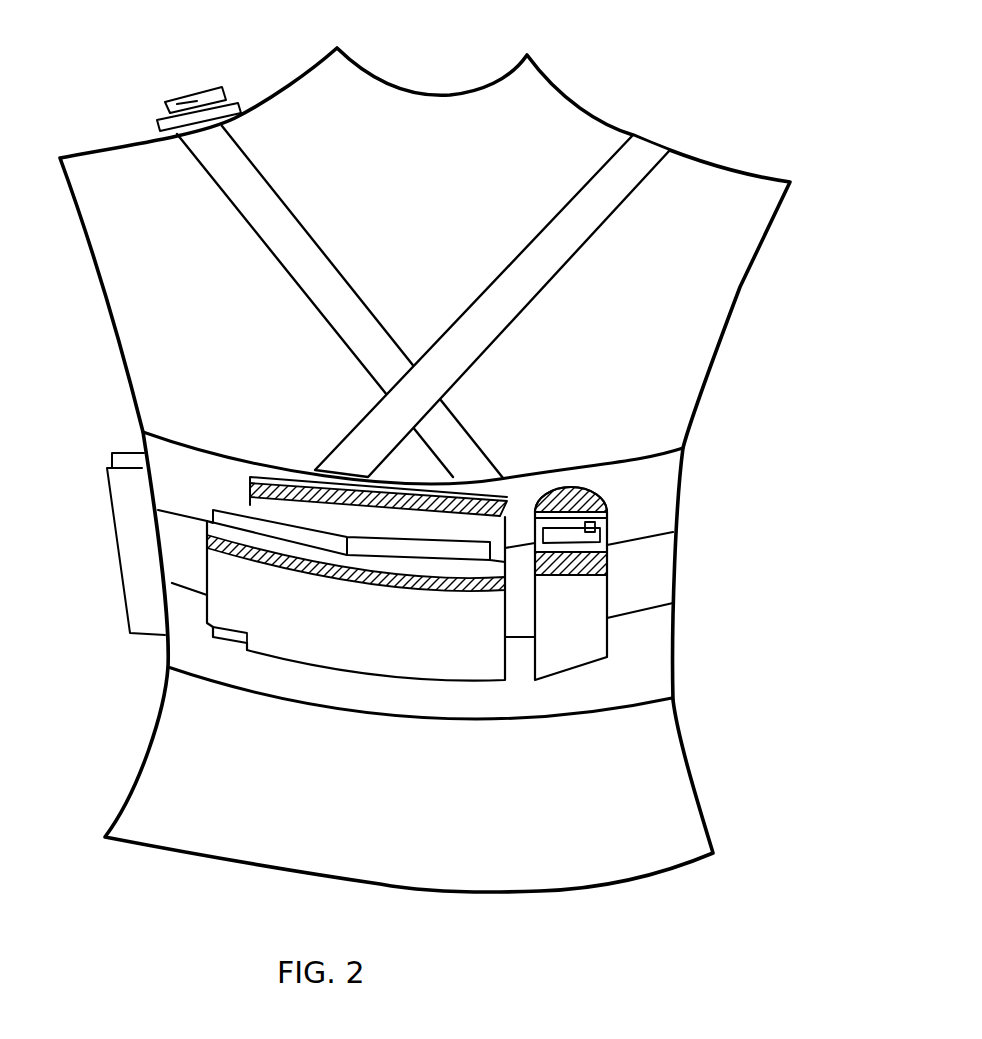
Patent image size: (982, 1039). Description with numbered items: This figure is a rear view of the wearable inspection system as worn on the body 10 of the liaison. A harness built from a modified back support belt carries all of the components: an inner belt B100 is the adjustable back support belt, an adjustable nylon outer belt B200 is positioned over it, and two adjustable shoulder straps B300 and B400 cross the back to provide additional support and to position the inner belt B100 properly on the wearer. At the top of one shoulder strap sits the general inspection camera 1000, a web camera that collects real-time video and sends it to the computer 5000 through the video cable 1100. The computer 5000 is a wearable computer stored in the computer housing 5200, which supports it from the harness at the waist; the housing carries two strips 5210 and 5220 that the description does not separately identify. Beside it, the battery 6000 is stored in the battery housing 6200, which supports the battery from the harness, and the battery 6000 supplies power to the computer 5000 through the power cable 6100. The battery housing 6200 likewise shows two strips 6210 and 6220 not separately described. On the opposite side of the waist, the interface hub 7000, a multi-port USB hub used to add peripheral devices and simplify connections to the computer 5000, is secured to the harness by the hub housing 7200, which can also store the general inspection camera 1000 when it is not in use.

The body 10 is at (700, 327).
The general inspection camera 1000 is at (187, 90).
The video cable 1100 is at (143, 110).
The shoulder strap B300 is at (303, 268).
The shoulder strap B400 is at (527, 282).
The outer belt B200 is at (653, 572).
The inner belt B100 is at (180, 653).
The interface hub 7000 is at (112, 456).
The hub housing 7200 is at (132, 545).
The computer housing 5200 is at (347, 660).
The computer 5000 is at (410, 547).
The upper fastener strip 5210 is at (265, 506).
The lower fastener strip 5220 is at (373, 585).
The battery housing 6200 is at (610, 655).
The second pocket upper fastener strip 6210 is at (588, 492).
The battery 6000 is at (608, 522).
The second pocket lower fastener strip 6220 is at (567, 577).
The power cable 6100 is at (510, 547).